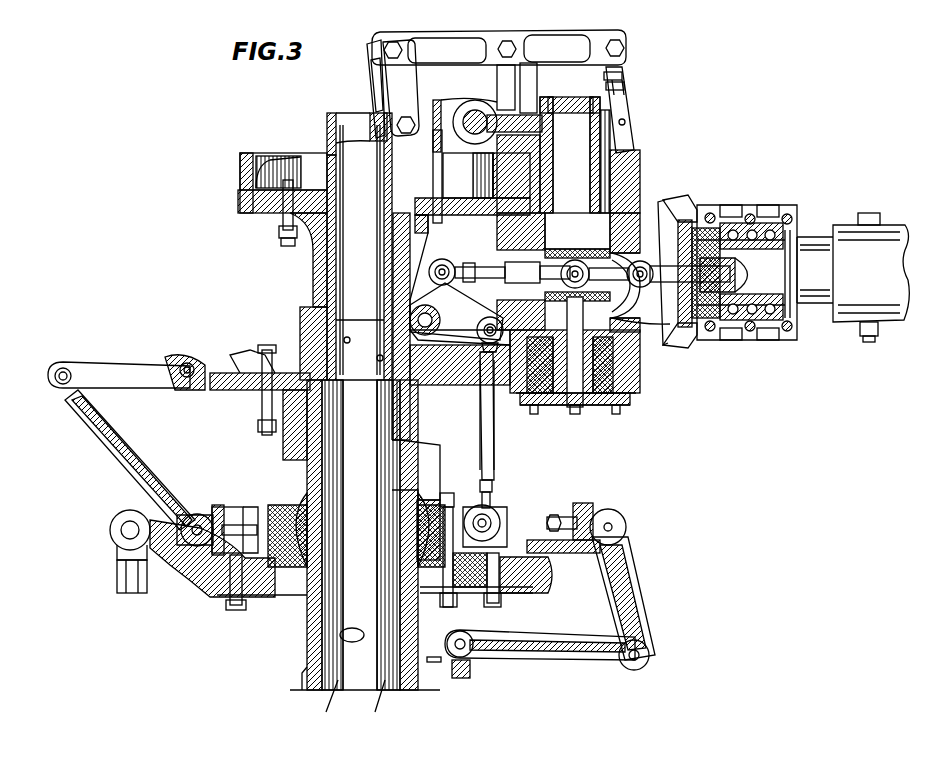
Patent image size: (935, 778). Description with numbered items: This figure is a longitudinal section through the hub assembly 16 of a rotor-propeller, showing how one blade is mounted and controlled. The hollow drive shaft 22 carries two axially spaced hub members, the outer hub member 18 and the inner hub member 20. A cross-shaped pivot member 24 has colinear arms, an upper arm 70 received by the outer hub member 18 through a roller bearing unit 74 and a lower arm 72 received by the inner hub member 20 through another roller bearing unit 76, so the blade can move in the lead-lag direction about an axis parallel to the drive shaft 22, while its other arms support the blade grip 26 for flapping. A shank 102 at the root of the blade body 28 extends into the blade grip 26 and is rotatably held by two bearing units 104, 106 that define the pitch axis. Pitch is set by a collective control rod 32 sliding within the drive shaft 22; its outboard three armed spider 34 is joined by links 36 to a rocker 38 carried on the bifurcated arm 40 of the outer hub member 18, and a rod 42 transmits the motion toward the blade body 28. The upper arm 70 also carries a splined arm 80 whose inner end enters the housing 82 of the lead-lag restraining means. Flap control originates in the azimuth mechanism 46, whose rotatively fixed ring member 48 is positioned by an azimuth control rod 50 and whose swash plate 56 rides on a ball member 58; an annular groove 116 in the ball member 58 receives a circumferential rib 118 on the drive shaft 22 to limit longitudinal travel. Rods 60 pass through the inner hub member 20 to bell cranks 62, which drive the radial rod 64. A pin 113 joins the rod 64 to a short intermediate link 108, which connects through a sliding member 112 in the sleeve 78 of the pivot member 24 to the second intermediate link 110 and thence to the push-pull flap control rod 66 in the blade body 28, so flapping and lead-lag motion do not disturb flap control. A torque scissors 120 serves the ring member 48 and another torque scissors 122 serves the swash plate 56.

The hub assembly 16 is at (666, 153).
The outer hub member 18 is at (246, 156).
The inner hub member 20 is at (250, 350).
The drive shaft 22 is at (305, 650).
The cross-shaped pivot member 24 is at (612, 224).
The blade grip 26 is at (710, 206).
The blade body 28 is at (893, 226).
The collective control rod 32 is at (370, 643).
The three armed spider 34 is at (384, 135).
The links 36 is at (370, 80).
The rocker 38 is at (562, 28).
The bifurcated arm 40 is at (518, 76).
The rod 42 is at (630, 124).
The azimuth mechanism 46 is at (96, 497).
The ring member 48 is at (190, 596).
The azimuth control rod 50 is at (112, 583).
The swash plate 56 is at (258, 508).
The ball member 58 is at (430, 497).
The rods 60 is at (494, 458).
The bell cranks 62 is at (472, 312).
The rod 64 is at (490, 272).
The flap control rod 66 is at (740, 274).
The upper arm 70 is at (590, 193).
The lower arm 72 is at (592, 414).
The roller bearing unit 74 is at (632, 186).
The roller bearing unit 76 is at (636, 369).
The sleeve 78 is at (575, 250).
The arm 80 is at (528, 112).
The housing 82 is at (452, 104).
The shank 102 is at (812, 240).
The bearing unit 104 is at (770, 225).
The bearing unit 106 is at (715, 232).
The intermediate link 108 is at (563, 245).
The intermediate link 110 is at (618, 262).
The sliding member 112 is at (612, 290).
The pin 113 is at (532, 258).
The annular groove 116 is at (400, 540).
The circumferential rib 118 is at (318, 526).
The torque scissors 120 is at (636, 588).
The torque scissors 122 is at (158, 468).